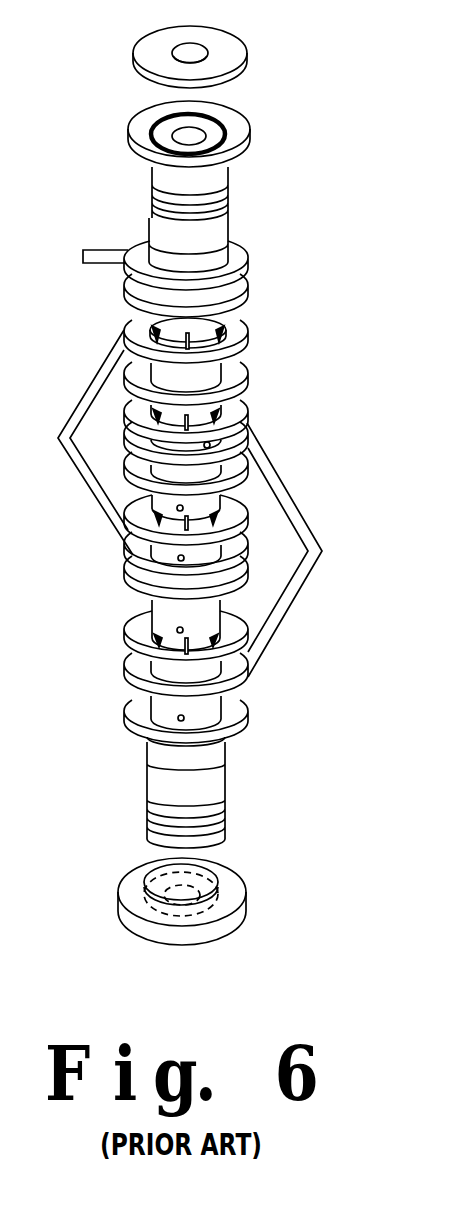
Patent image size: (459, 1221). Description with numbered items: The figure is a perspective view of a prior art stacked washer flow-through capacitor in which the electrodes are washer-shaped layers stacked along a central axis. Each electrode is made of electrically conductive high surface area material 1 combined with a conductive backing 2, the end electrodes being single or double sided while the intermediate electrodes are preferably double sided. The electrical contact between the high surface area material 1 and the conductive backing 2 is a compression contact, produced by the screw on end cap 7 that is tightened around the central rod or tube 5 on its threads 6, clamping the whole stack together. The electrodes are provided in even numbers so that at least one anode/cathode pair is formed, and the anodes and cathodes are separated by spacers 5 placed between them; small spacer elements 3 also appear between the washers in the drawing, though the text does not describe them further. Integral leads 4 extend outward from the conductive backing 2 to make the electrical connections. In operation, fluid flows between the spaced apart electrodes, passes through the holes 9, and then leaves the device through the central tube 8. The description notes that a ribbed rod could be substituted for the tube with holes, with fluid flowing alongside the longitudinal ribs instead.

The electrically conductive high surface area material 1 is at (133, 293).
The conductive backing 2 is at (237, 262).
The spacer 3 is at (228, 333).
The integral leads 4 is at (110, 257).
The central rod or tube 5 is at (216, 811).
The threads 6 is at (226, 202).
The screw on end cap 7 is at (253, 158).
The central tube 8 is at (243, 68).
The holes 9 is at (222, 443).